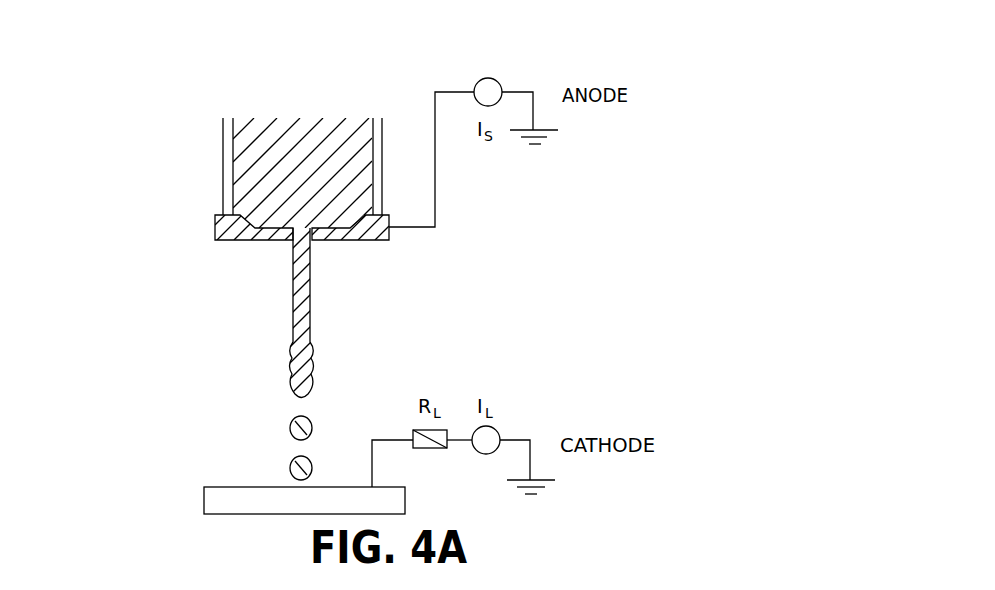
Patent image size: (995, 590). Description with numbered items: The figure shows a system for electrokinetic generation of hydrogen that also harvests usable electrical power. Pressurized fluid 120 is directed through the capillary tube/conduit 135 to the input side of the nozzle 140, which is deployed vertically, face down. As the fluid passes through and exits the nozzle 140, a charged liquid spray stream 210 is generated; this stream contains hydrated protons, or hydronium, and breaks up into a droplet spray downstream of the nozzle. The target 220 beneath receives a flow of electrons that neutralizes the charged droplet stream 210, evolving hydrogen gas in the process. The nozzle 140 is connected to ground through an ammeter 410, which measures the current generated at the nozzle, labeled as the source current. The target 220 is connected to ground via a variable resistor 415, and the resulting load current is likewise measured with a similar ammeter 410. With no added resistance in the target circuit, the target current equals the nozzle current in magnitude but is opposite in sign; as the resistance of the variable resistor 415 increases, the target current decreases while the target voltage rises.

The pressurized fluid 120 is at (306, 148).
The capillary tube/conduit 135 is at (222, 164).
The nozzle 140 is at (215, 233).
The charged liquid spray stream 210 is at (311, 296).
The target 220 is at (203, 506).
The ammeter 410 is at (502, 80).
The variable resistor 415 is at (440, 452).